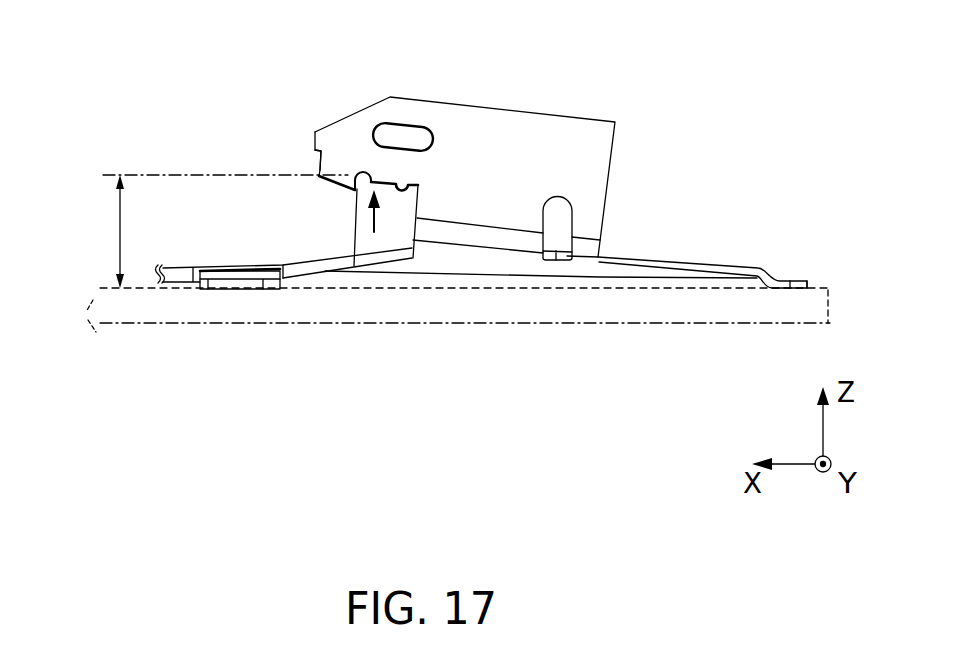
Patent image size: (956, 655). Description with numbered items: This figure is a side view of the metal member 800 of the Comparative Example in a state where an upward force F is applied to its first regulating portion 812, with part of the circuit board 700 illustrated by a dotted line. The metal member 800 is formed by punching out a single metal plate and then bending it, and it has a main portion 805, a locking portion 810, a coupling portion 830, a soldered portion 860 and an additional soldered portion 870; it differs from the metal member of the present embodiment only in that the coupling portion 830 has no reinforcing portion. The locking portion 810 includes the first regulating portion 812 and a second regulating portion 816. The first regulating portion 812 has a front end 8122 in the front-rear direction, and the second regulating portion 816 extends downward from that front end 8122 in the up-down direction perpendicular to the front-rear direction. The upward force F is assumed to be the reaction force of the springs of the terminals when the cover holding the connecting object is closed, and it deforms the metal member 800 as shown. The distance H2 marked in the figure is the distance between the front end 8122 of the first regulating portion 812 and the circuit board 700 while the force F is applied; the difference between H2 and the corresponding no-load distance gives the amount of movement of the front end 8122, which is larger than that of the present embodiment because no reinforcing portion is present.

The metal member 800 is at (162, 37).
The coupling portion 830 is at (481, 141).
The front end 8122 is at (348, 175).
The locking portion 810 is at (376, 212).
The first regulating portion 812 is at (415, 183).
The second regulating portion 816 is at (358, 187).
The upward force F is at (376, 217).
The main portion 805 is at (665, 262).
The additional soldered portion 870 is at (797, 280).
The soldered portion 860 is at (240, 289).
The circuit board 700 is at (157, 323).
The distance H2 is at (194, 231).